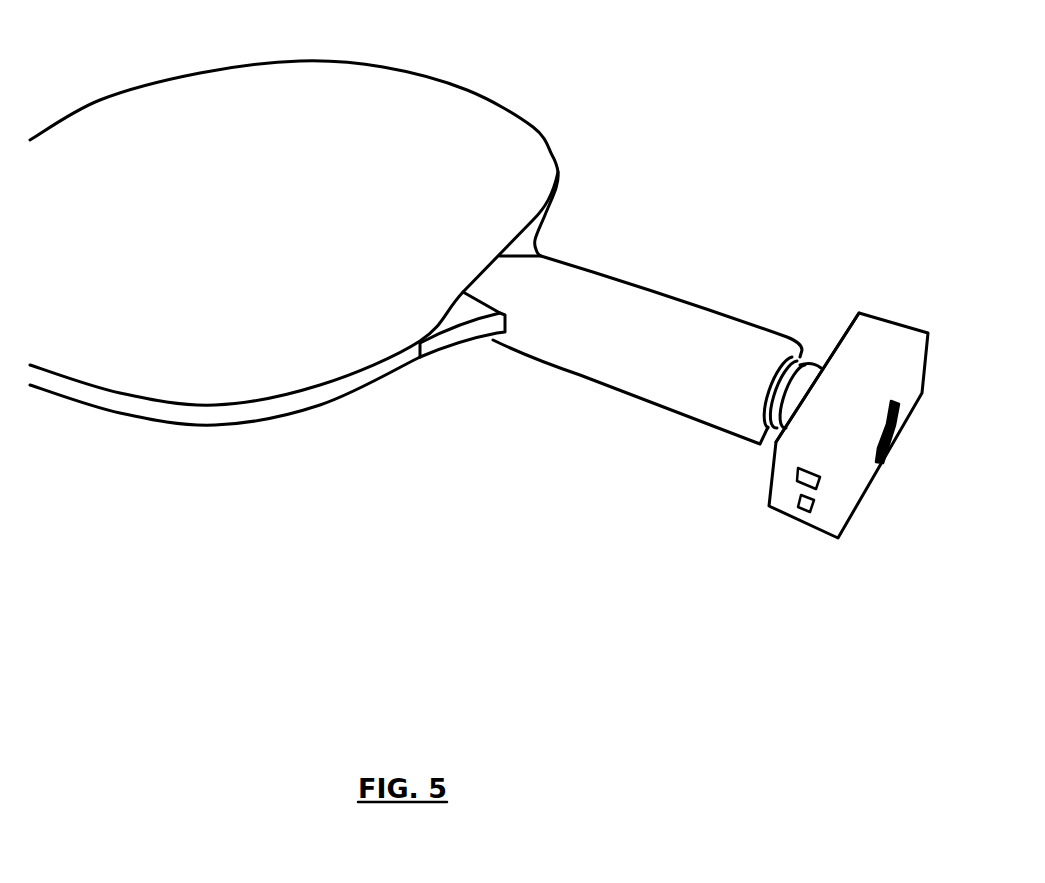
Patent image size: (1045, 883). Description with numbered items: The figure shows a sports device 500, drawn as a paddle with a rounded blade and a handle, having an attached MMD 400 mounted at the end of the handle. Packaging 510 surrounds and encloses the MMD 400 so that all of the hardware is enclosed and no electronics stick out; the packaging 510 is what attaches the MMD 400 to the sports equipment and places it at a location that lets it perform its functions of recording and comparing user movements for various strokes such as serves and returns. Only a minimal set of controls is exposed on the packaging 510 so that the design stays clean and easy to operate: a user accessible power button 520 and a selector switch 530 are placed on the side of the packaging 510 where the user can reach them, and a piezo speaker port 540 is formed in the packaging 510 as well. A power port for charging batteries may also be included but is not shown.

The sports device 500 is at (431, 475).
The MMD 400 is at (877, 288).
The packaging 510 is at (843, 372).
The power button 520 is at (798, 478).
The selector switch 530 is at (801, 502).
The piezo (speaker) port 540 is at (885, 418).